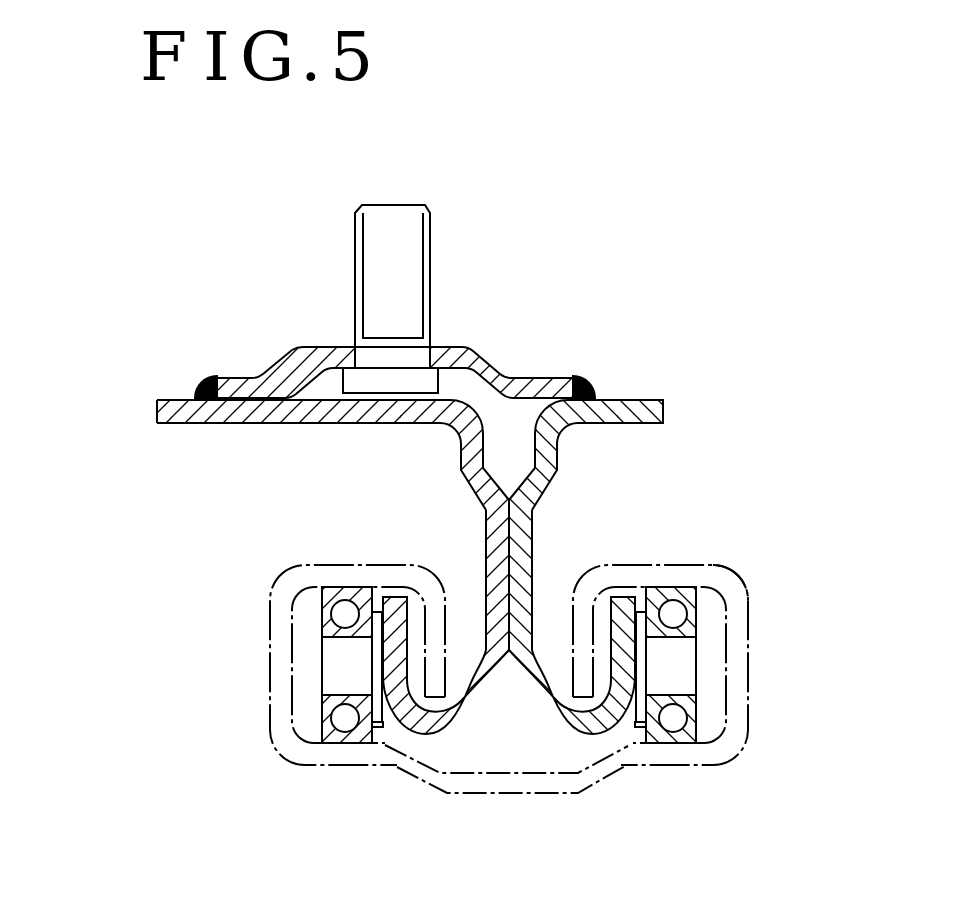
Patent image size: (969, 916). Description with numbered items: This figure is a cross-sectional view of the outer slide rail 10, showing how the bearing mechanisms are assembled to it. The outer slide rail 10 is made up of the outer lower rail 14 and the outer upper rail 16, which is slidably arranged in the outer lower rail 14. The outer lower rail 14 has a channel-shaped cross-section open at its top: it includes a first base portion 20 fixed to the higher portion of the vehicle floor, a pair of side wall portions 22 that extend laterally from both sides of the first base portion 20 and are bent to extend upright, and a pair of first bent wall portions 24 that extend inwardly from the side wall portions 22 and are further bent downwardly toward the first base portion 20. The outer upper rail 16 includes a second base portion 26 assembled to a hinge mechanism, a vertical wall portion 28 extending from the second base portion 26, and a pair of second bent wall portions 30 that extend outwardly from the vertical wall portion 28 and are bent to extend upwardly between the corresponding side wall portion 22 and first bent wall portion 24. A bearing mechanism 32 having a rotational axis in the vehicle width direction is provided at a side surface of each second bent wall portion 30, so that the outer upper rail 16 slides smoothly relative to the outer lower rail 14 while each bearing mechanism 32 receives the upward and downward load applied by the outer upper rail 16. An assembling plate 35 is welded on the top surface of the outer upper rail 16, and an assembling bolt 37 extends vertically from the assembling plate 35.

The outer slide rail 10 is at (104, 330).
The outer lower rail 14 is at (747, 575).
The outer upper rail 16 is at (632, 398).
The first base portion 20 is at (538, 797).
The side wall portions 22 is at (268, 713).
The first bent wall portions 24 is at (405, 730).
The second base portion 26 is at (383, 424).
The vertical wall portion 28 is at (535, 542).
The second bent wall portions 30 is at (380, 662).
The bearing mechanism 32 is at (325, 616).
The assembling plate 35 is at (515, 377).
The assembling bolt 37 is at (413, 242).